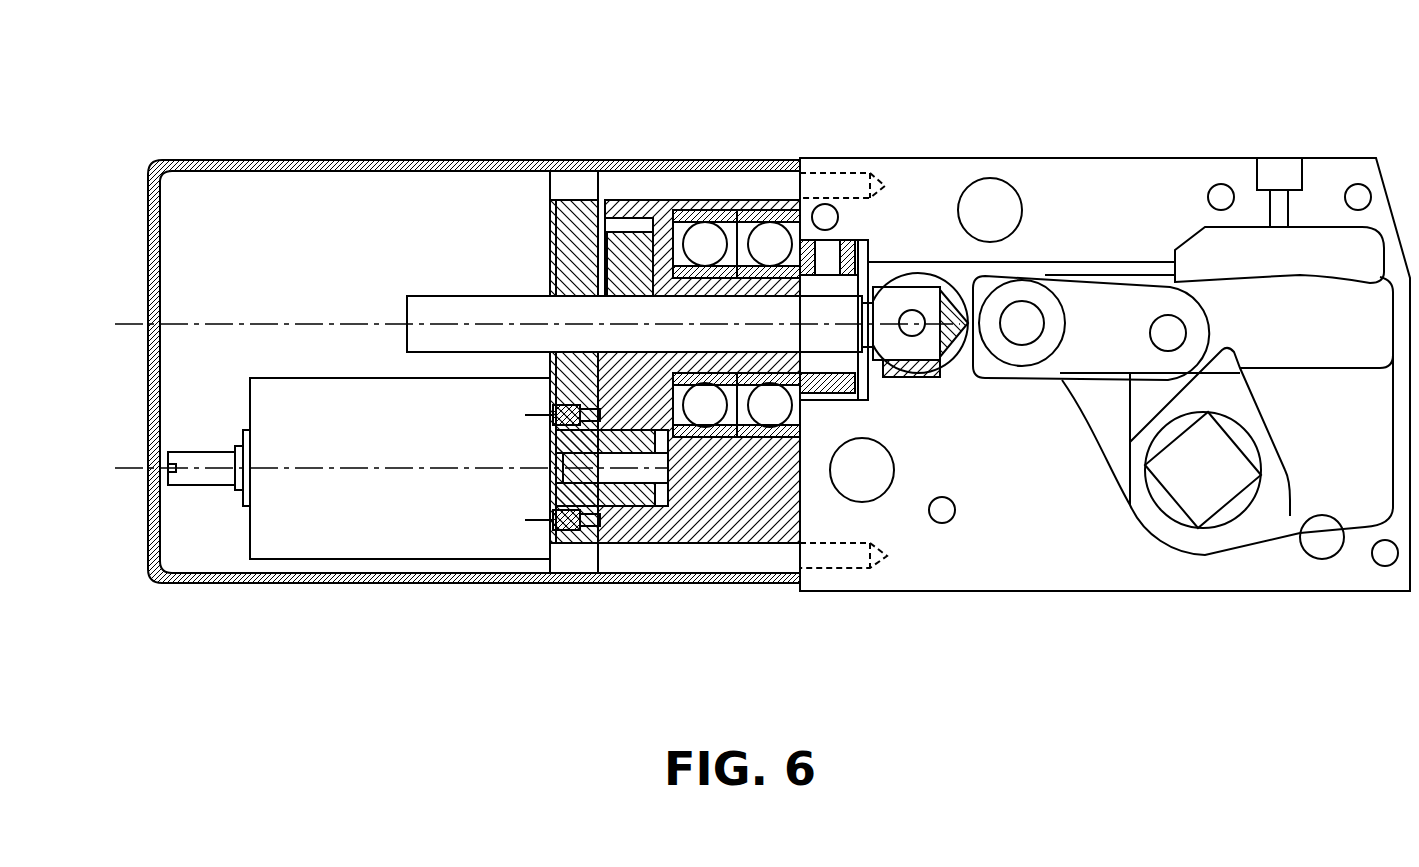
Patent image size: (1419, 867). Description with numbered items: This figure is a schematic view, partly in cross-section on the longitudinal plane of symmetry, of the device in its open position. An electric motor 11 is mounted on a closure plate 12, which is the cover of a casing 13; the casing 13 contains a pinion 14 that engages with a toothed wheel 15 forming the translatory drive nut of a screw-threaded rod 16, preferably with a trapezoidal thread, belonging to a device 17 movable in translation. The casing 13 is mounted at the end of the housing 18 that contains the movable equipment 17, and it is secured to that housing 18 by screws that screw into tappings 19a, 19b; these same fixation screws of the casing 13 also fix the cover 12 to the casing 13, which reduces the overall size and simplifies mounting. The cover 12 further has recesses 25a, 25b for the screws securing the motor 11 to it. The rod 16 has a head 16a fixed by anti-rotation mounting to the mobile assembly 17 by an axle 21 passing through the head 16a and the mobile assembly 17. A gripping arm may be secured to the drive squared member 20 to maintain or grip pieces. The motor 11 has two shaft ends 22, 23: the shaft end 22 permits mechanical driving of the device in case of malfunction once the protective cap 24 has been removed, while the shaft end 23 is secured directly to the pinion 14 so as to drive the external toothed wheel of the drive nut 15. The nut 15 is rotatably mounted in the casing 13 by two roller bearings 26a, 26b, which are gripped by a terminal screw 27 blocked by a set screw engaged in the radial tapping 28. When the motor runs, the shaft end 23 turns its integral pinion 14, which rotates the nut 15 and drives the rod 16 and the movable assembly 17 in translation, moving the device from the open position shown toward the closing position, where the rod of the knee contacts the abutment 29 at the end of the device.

The electric motor 11 is at (320, 527).
The closure plate 12 is at (546, 240).
The casing 13 is at (760, 528).
The pinion 14 is at (645, 495).
The toothed wheel 15 is at (626, 246).
The screw-threaded rod 16 is at (440, 303).
The head 16a is at (901, 292).
The device movable in translation 17 is at (965, 283).
The housing 18 is at (1090, 553).
The tapping 19a is at (843, 562).
The tapping 19b is at (850, 180).
The drive squared member 20 is at (1198, 493).
The axle 21 is at (914, 322).
The shaft end 22 is at (202, 475).
The shaft end 23 is at (553, 473).
The protective cap 24 is at (313, 160).
The recess 25a is at (590, 523).
The recess 25b is at (580, 423).
The roller bearing 26a is at (703, 246).
The roller bearing 26b is at (768, 243).
The terminal screw 27 is at (853, 382).
The radial tapping 28 is at (832, 262).
The abutment 29 is at (1322, 548).